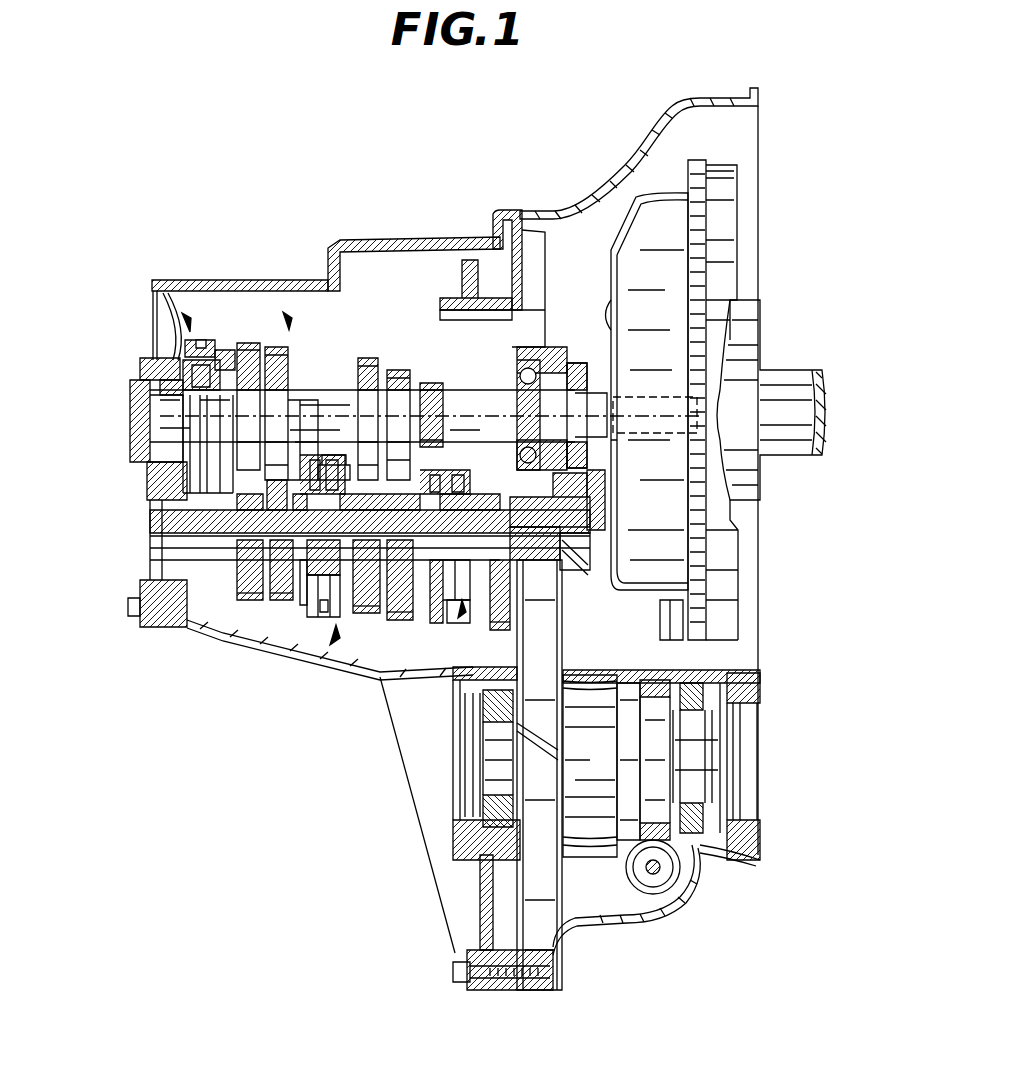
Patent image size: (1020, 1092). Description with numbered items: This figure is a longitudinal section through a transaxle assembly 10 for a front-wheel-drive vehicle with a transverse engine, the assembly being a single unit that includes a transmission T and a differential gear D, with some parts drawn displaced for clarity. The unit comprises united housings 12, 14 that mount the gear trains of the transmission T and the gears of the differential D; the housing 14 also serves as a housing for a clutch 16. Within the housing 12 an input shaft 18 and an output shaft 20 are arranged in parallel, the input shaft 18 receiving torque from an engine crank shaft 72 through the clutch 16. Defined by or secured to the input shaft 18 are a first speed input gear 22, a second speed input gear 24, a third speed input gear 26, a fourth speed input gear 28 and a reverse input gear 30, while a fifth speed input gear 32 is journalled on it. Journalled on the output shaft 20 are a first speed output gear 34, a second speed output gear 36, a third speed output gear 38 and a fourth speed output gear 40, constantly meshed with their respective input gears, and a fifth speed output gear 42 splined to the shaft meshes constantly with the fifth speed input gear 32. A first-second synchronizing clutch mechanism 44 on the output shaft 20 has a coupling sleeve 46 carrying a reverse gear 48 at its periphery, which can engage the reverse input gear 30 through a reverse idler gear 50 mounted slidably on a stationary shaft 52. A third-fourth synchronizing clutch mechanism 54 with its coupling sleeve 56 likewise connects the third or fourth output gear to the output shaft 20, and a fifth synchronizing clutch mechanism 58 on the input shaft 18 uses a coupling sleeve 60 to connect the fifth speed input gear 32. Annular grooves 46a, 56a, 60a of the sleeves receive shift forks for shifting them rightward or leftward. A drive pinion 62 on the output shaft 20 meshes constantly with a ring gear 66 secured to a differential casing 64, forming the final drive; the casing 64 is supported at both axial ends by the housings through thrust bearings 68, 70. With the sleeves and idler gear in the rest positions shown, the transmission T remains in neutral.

The transaxle assembly 10 is at (463, 130).
The housing 12 is at (430, 240).
The housing 14 is at (566, 211).
The clutch 16 is at (637, 192).
The input shaft 18 is at (320, 388).
The output shaft 20 is at (600, 527).
The first speed input gear 22 is at (515, 320).
The second speed input gear 24 is at (400, 372).
The third speed input gear 26 is at (366, 360).
The fourth speed input gear 28 is at (278, 350).
The reverse input gear 30 is at (432, 383).
The fifth speed input gear 32 is at (245, 345).
The first speed output gear 34 is at (498, 632).
The second speed output gear 36 is at (400, 618).
The third speed output gear 38 is at (352, 612).
The fourth speed output gear 40 is at (280, 605).
The fifth speed output gear 42 is at (247, 603).
The first-second synchronizing clutch mechanism 44 is at (455, 600).
The coupling sleeve 46 is at (464, 612).
The annular groove 46a is at (436, 625).
The reverse gear 48 is at (440, 625).
The reverse idler gear 50 is at (468, 262).
The stationary shaft 52 is at (433, 300).
The third-fourth synchronizing clutch mechanism 54 is at (315, 612).
The coupling sleeve 56 is at (303, 605).
The annular groove 56a is at (325, 615).
The fifth synchronizing clutch mechanism 58 is at (182, 315).
The coupling sleeve 60 is at (208, 342).
The annular groove 60a is at (192, 340).
The drive pinion 62 is at (600, 623).
The differential gear casing 64 is at (578, 763).
The ring gear 66 is at (540, 622).
The thrust bearing 68 is at (467, 845).
The thrust bearing 70 is at (718, 857).
The engine crank shaft 72 is at (790, 378).
The transmission T is at (285, 320).
The differential gear D is at (583, 840).